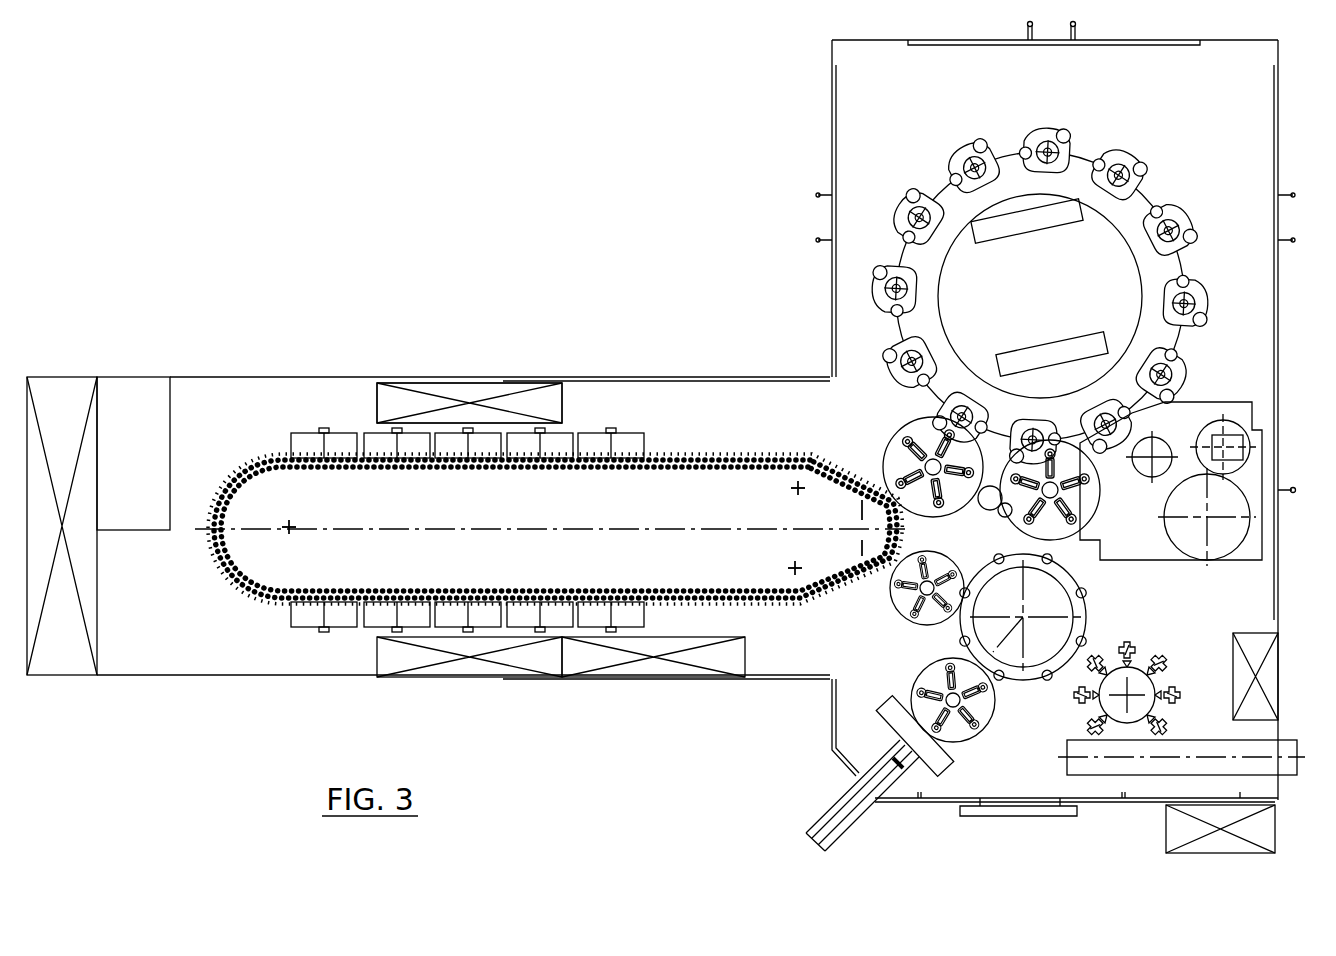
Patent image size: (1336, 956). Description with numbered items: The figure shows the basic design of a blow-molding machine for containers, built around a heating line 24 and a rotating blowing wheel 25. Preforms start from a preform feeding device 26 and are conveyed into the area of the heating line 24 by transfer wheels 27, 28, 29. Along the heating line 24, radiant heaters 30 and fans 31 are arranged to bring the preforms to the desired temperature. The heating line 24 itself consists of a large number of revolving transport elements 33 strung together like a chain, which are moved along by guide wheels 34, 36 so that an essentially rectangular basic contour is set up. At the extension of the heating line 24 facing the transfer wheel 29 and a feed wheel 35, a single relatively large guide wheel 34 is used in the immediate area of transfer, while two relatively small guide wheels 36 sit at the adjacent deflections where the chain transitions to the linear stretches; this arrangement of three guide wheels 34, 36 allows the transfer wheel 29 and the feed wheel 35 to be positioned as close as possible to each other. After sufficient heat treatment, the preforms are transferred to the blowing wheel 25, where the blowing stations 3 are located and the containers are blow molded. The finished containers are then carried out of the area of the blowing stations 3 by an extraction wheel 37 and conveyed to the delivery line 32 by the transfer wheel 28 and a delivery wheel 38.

The blowing station 3 is at (880, 270).
The heating line 24 is at (604, 410).
The blowing wheel 25 is at (970, 208).
The preform feeding device 26 is at (878, 838).
The transfer wheel 27 is at (968, 742).
The transfer wheel 28 is at (1023, 667).
The transfer wheel 29 is at (903, 612).
The radiant heater 30 is at (342, 442).
The fan 31 is at (465, 392).
The delivery line 32 is at (1285, 767).
The transport element 33 is at (257, 597).
The guide wheel 34 is at (290, 532).
The feed wheel 35 is at (915, 415).
The guide wheel 36 is at (798, 488).
The extraction wheel 37 is at (1110, 520).
The delivery wheel 38 is at (1137, 707).